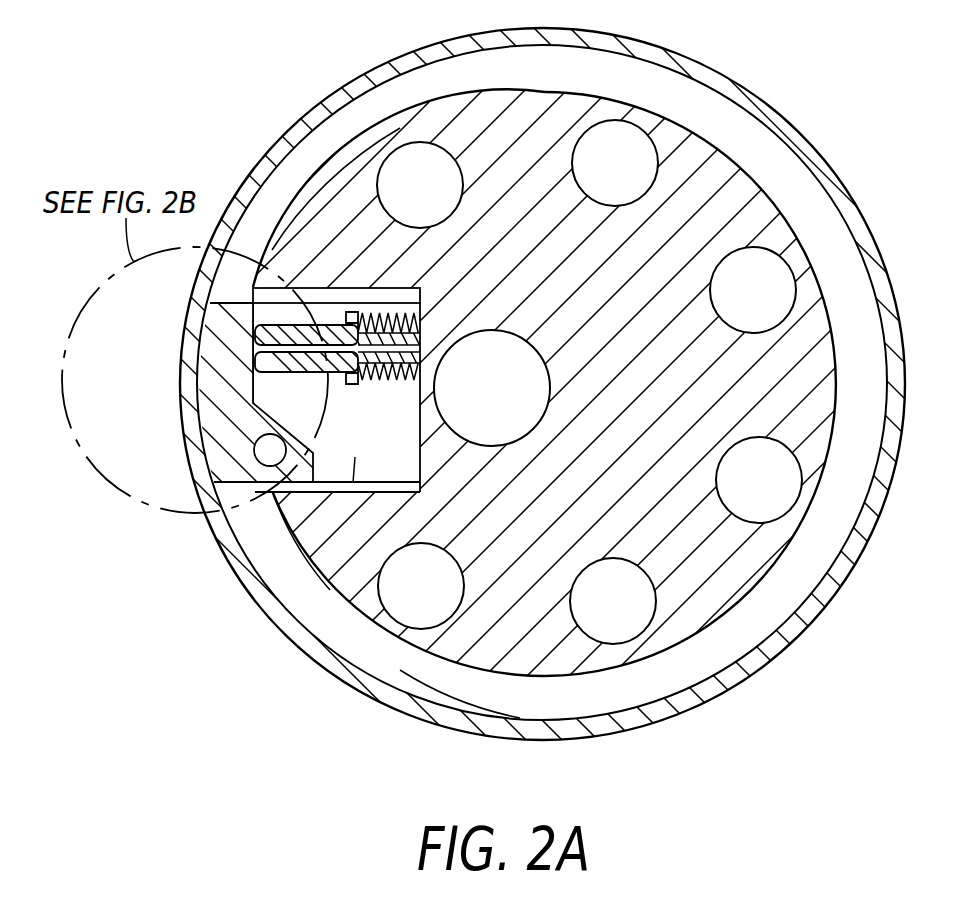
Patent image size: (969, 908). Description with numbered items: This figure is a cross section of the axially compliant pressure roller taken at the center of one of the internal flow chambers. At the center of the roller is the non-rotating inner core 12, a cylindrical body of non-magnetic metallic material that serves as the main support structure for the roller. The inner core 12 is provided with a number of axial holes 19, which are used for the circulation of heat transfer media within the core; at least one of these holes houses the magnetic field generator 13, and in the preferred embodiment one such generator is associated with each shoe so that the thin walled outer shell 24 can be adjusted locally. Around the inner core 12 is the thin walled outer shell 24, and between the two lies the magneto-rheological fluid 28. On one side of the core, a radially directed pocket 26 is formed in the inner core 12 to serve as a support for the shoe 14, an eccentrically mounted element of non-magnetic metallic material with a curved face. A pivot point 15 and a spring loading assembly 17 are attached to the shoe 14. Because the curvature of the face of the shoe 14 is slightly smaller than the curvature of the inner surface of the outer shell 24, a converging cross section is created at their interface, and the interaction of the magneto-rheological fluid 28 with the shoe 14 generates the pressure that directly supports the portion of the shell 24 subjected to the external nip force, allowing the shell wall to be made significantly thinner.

The inner core 12 is at (717, 167).
The magnetic field generator 13 is at (505, 396).
The shoe 14 is at (210, 345).
The pivot point 15 is at (263, 460).
The spring loading assembly 17 is at (288, 367).
The axial holes 19 is at (778, 490).
The thin walled outer shell 24 is at (280, 147).
The pockets 26 is at (290, 535).
The magneto-rheological fluid 28 is at (455, 695).